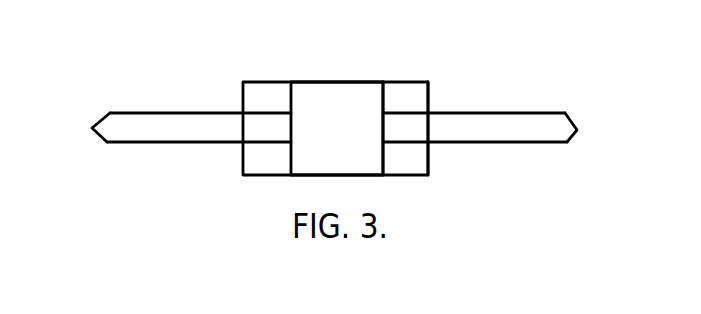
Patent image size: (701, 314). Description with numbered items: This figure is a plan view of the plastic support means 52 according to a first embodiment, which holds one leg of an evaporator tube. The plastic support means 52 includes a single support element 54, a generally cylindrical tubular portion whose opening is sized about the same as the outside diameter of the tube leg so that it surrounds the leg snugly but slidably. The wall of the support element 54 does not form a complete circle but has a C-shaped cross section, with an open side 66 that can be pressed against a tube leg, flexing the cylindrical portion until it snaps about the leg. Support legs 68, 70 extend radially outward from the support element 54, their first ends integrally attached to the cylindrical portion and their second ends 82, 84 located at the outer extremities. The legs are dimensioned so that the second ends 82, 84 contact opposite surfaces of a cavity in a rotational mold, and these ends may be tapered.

The plastic support means 52 is at (349, 44).
The support element 54 is at (424, 93).
The open side 66 is at (357, 108).
The support leg 68 is at (195, 127).
The support leg 70 is at (502, 128).
The second end 82 is at (93, 129).
The second end 84 is at (577, 130).